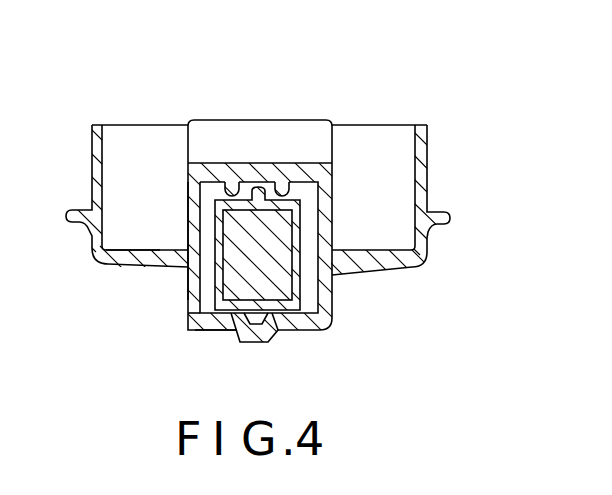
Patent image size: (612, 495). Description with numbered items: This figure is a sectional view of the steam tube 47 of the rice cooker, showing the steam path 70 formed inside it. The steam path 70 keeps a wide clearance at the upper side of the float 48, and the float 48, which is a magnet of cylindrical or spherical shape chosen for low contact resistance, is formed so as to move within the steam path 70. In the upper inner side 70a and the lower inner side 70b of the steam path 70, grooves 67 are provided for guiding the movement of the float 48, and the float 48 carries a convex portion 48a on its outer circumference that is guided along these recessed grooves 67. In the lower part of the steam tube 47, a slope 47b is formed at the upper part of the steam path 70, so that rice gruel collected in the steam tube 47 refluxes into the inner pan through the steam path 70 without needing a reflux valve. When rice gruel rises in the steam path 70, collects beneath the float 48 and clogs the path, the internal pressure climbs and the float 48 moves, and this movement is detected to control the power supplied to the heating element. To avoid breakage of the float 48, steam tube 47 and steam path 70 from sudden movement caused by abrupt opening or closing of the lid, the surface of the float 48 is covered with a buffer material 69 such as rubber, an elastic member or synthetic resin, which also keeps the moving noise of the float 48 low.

The steam tube 47 is at (420, 184).
The slope 47b is at (125, 249).
The float 48 is at (283, 271).
The convex portion 48a is at (261, 190).
The grooves 67 is at (278, 180).
The buffer material 69 is at (190, 325).
The steam path 70 is at (203, 168).
The upper inner side 70a is at (195, 205).
The lower inner side 70b is at (212, 315).